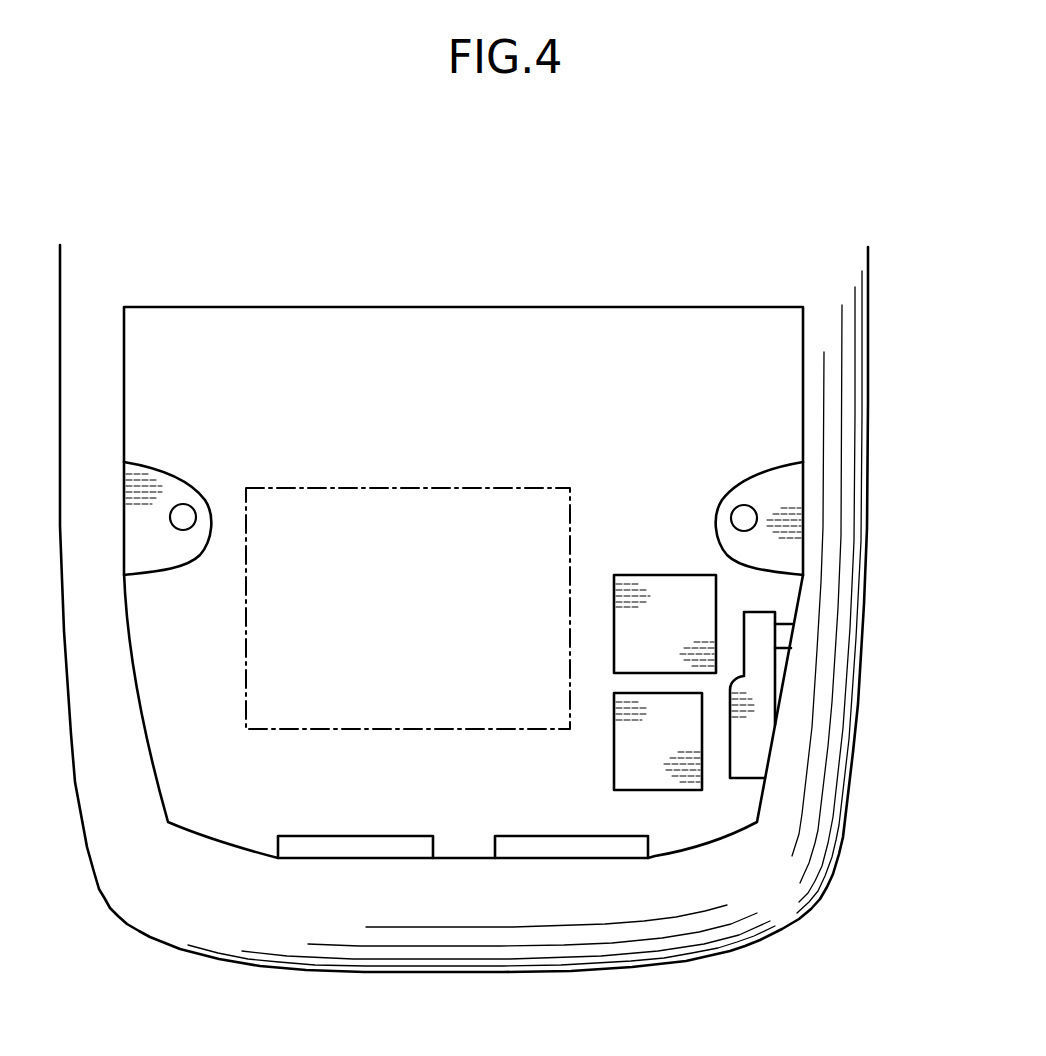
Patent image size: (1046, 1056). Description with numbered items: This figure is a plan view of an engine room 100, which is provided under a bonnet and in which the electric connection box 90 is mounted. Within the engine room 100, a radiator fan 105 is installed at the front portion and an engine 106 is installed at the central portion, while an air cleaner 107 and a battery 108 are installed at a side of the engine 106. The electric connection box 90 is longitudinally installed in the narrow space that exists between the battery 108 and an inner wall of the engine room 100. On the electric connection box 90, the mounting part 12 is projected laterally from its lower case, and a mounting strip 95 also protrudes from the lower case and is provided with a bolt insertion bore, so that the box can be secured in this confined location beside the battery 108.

The engine room 100 is at (491, 325).
The engine 106 is at (417, 487).
The air cleaner 107 is at (655, 585).
The battery 108 is at (614, 771).
The radiator fan 105 is at (523, 845).
The mounting part 12 is at (785, 703).
The mounting strip 95 is at (788, 638).
The electric connection box 90 is at (766, 743).